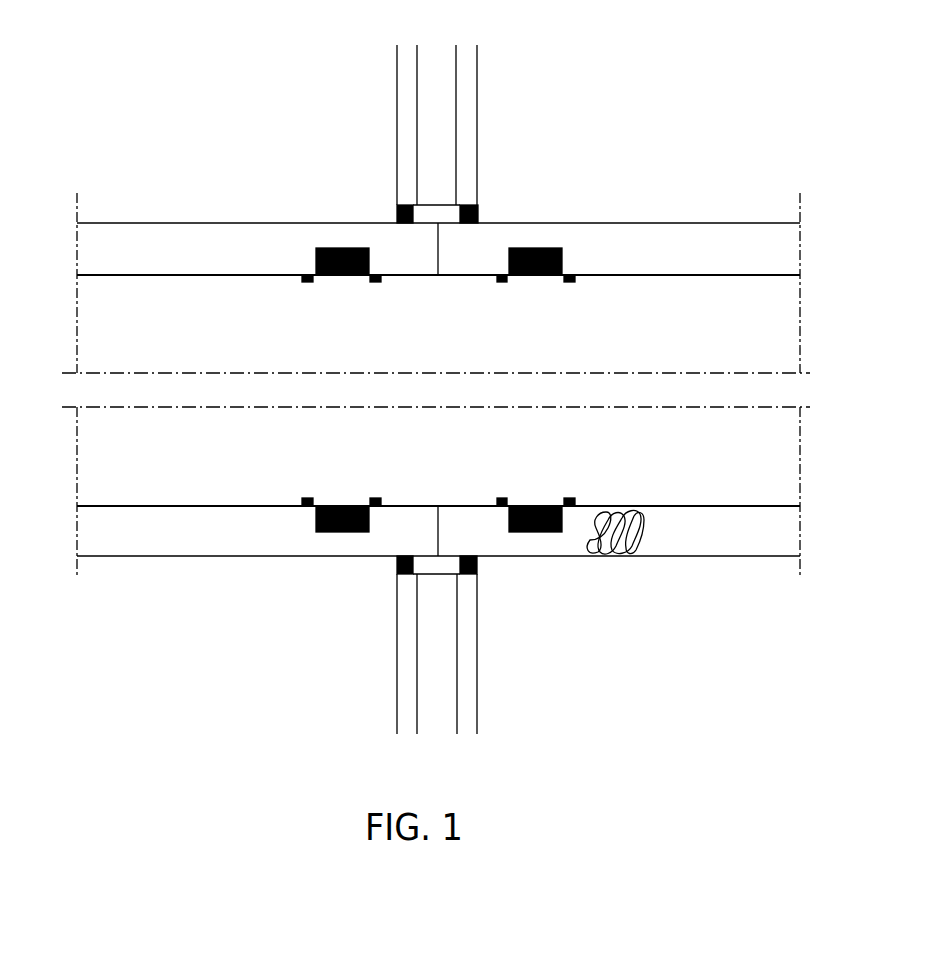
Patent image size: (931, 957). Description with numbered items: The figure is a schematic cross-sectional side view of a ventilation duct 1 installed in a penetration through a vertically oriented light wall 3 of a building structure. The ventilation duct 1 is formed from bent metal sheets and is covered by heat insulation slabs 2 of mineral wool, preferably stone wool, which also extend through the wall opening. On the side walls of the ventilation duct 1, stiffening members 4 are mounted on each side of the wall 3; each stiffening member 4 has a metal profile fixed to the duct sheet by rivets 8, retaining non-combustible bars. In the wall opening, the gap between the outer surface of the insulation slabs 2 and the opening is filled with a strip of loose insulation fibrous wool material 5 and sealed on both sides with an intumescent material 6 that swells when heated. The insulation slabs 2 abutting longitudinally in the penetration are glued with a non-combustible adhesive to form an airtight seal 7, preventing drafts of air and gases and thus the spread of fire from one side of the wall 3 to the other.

The ventilation duct 1 is at (694, 276).
The heat insulation slabs 2 is at (220, 238).
The light wall 3 is at (368, 88).
The stiffening members 4 is at (334, 248).
The loose insulation fibrous wool material 5 is at (437, 213).
The intumescent material 6 is at (480, 208).
The airtight seal 7 is at (438, 252).
The rivets 8 is at (500, 498).